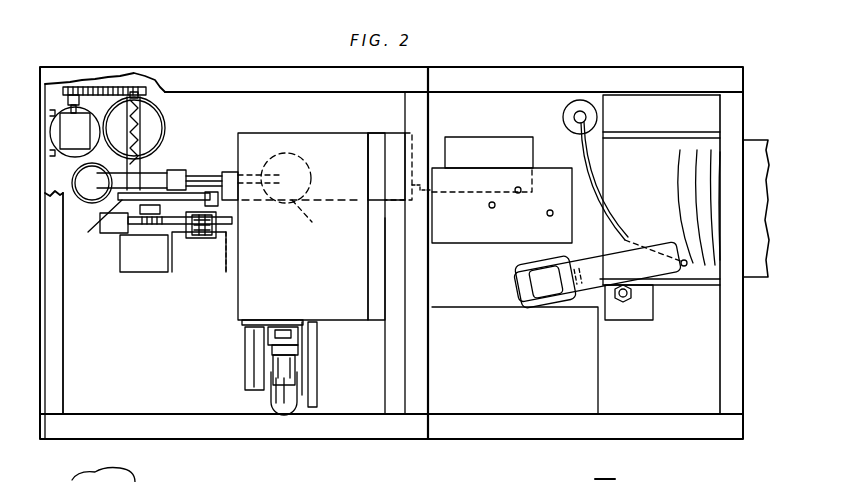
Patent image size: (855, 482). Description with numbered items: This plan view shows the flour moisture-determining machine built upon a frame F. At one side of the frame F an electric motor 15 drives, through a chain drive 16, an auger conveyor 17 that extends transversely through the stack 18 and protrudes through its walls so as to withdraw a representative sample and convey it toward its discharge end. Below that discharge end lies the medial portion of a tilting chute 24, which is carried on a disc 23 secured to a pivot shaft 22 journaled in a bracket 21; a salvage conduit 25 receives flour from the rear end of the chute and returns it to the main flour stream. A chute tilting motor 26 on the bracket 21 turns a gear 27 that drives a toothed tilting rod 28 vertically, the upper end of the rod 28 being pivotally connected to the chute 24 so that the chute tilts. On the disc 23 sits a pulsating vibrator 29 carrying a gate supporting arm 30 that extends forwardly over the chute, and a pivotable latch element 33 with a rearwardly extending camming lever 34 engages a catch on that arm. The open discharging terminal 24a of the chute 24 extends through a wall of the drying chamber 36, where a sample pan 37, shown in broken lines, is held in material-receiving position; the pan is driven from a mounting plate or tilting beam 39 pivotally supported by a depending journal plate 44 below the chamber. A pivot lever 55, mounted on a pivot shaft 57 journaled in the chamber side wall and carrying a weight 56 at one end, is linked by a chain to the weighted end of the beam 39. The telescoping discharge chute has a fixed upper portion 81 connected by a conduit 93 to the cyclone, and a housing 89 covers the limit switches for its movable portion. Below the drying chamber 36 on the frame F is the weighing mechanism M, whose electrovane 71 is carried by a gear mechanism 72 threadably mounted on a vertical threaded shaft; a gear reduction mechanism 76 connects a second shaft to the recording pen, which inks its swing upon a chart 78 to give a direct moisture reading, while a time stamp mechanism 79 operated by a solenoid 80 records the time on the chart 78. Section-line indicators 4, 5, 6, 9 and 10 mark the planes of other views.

The chain drive 16 is at (108, 86).
The section line 9 is at (90, 181).
The stack 18 is at (172, 102).
The section line 10 / shaft 10 is at (100, 126).
The electric motor 15 is at (58, 130).
The auger conveyor 17 is at (140, 124).
The section line 4 is at (199, 171).
The tilting chute 24 is at (80, 174).
The pivot shaft 22 is at (157, 178).
The pulsating vibrator 29 is at (178, 176).
The gate supporting arm 30 is at (224, 180).
The salvage conduit 25 is at (68, 198).
The camming lever 34 is at (94, 224).
The section line 6 is at (92, 236).
The bracket 21 is at (164, 236).
The tilting rod 28 is at (194, 236).
The chute tilting motor 26 is at (190, 280).
The disc 23 is at (190, 190).
The latch element 33 is at (208, 196).
The gear 27 is at (214, 230).
The drying chamber 36 is at (312, 271).
The discharging terminal 24a is at (300, 166).
The sample pan 37 is at (315, 215).
The section line 5 is at (299, 270).
The weighing mechanism M is at (380, 134).
The gear mechanism 72 is at (494, 143).
The chart 78 is at (656, 146).
The electrovane 71 is at (598, 236).
The gear reduction mechanism 76 is at (456, 240).
The time stamp mechanism 79 is at (623, 274).
The solenoid 80 is at (630, 312).
The housing 89 is at (370, 278).
The pivot lever 55 is at (260, 320).
The weight 56 is at (250, 356).
The pivot shaft 57 is at (283, 340).
The fixed upper portion 81 is at (298, 350).
The journal plate 44 is at (316, 360).
The mounting plate 39 is at (306, 376).
The conduit 93 is at (272, 402).
The frame F is at (452, 443).